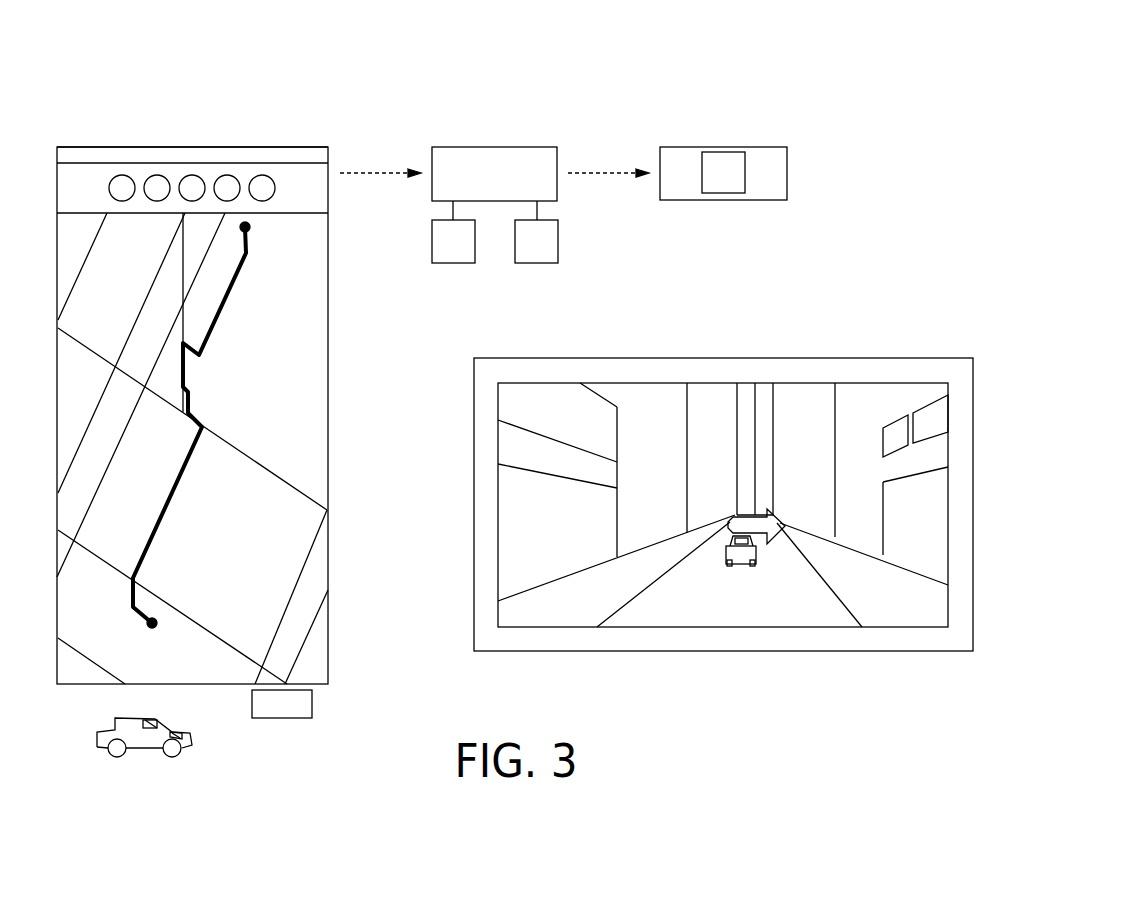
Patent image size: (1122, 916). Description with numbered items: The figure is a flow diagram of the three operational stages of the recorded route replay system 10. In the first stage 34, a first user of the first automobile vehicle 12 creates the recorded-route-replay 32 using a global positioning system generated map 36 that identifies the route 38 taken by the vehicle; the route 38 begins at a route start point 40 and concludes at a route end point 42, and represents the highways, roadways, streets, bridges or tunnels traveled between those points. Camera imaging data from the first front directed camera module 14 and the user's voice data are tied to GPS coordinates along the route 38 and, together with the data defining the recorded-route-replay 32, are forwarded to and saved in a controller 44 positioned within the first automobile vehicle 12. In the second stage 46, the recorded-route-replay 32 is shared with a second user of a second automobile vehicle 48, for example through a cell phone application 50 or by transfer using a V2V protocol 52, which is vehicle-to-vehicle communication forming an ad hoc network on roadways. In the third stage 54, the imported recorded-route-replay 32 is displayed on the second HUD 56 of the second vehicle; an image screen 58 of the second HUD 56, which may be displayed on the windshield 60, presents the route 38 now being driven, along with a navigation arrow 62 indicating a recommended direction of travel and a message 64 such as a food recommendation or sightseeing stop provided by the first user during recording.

The recorded route replay system 10 is at (795, 68).
The first automobile vehicle 12 is at (123, 723).
The first front directed camera module 14 is at (152, 718).
The recorded-route-replay 32 is at (710, 184).
The first stage 34 is at (57, 125).
The global positioning system generated map 36 is at (300, 155).
The route 38 is at (165, 518).
The route start point 40 is at (158, 615).
The route end point 42 is at (250, 227).
The controller 44 is at (187, 737).
The second stage 46 is at (430, 125).
The second automobile vehicle 48 is at (481, 187).
The cell phone application 50 is at (440, 253).
The V2V protocol 52 is at (524, 253).
The third stage 54 is at (660, 125).
The second HUD 56 is at (750, 184).
The image screen 58 is at (880, 398).
The windshield 60 is at (487, 598).
The navigation arrow 62 is at (777, 512).
The message 64 is at (740, 620).